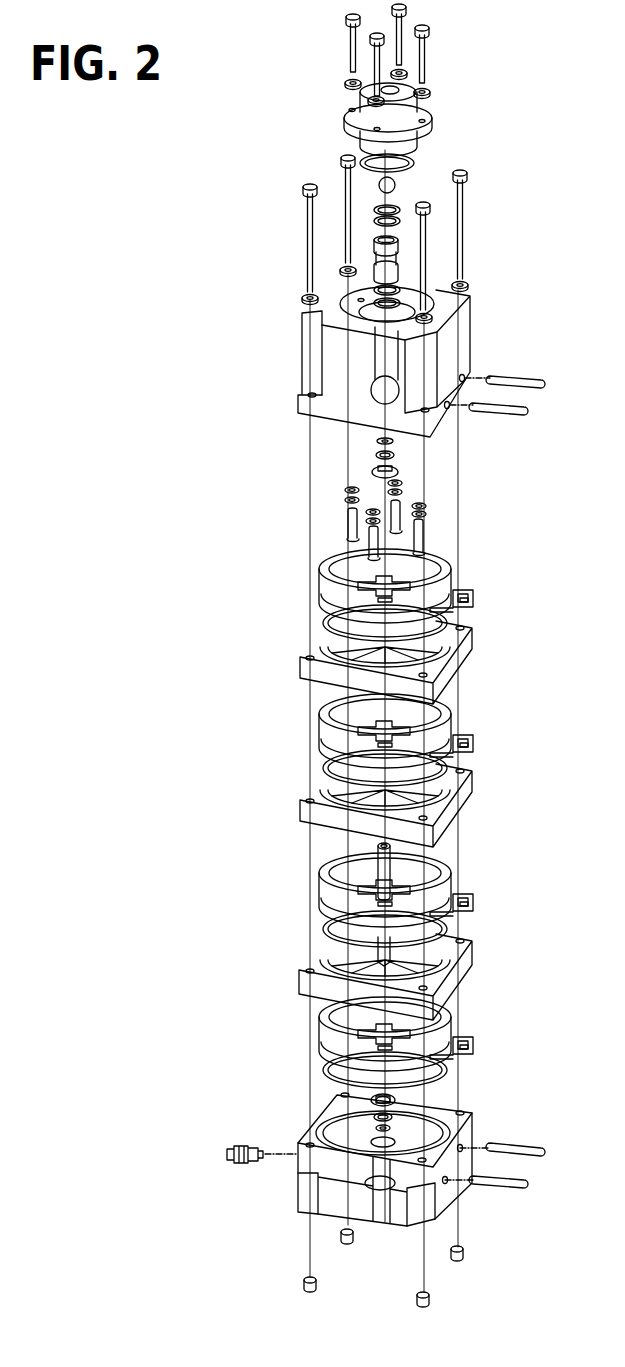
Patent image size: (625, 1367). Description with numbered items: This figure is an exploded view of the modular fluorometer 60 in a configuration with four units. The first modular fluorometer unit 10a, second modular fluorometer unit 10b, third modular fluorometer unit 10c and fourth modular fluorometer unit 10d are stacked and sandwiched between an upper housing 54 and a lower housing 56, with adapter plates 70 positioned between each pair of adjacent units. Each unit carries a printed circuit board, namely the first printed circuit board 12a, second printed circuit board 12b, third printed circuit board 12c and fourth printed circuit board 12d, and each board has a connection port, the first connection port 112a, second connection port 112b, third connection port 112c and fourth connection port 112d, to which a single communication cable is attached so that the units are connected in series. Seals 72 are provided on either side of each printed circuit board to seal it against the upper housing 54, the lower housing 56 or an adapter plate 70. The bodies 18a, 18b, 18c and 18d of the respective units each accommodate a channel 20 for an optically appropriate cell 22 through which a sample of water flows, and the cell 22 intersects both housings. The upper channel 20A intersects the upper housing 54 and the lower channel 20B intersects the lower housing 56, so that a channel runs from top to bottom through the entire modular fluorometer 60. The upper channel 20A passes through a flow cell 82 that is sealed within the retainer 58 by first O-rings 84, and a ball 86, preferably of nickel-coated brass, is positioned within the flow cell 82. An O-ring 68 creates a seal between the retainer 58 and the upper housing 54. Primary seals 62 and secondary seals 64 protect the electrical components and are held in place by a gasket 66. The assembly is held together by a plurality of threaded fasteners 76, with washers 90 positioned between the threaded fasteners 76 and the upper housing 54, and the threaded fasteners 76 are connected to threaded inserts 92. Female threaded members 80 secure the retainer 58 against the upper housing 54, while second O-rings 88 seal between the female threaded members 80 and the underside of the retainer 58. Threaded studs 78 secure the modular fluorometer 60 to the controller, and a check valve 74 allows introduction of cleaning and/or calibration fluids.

The modular fluorometer 60 is at (178, 541).
The threaded fasteners 76 is at (421, 52).
The retainer 58 is at (345, 118).
The O-ring 68 is at (361, 163).
The ball 86 is at (396, 186).
The first O-rings 84 is at (401, 211).
The flow cell 82 is at (400, 291).
The washers 90 is at (341, 271).
The upper housing 54 is at (300, 411).
The upper channel 20A is at (373, 347).
The threaded studs 78 is at (540, 388).
The primary seals 62 is at (394, 441).
The secondary seals 64 is at (395, 455).
The gasket 66 is at (372, 471).
The second O-rings 88 is at (344, 490).
The female threaded members 80 is at (347, 529).
The seals 72 is at (321, 571).
The first modular fluorometer unit 10a is at (305, 594).
The first valve element 18a is at (400, 578).
The first printed circuit board 12a is at (473, 597).
The first connection port 112a is at (475, 612).
The adapter plates 70 is at (300, 660).
The second modular fluorometer unit 10b is at (305, 739).
The second valve element 18b is at (400, 722).
The channel 20 is at (373, 726).
The second printed circuit board 12b is at (473, 741).
The second connection port 112b is at (475, 752).
The third modular fluorometer unit 10c is at (305, 906).
The third valve element 18c is at (400, 881).
The optically appropriate cell 22 is at (378, 870).
The third printed circuit board 12c is at (473, 898).
The third connection port 112c is at (475, 910).
The fourth modular fluorometer unit 10d is at (305, 1045).
The fourth valve element 18d is at (400, 1024).
The fourth printed circuit board 12d is at (473, 1041).
The fourth connection port 112d is at (475, 1052).
The lower housing 56 is at (300, 1196).
The lower channel 20B is at (382, 1205).
The check valve 74 is at (231, 1152).
The threaded inserts 92 is at (457, 1259).